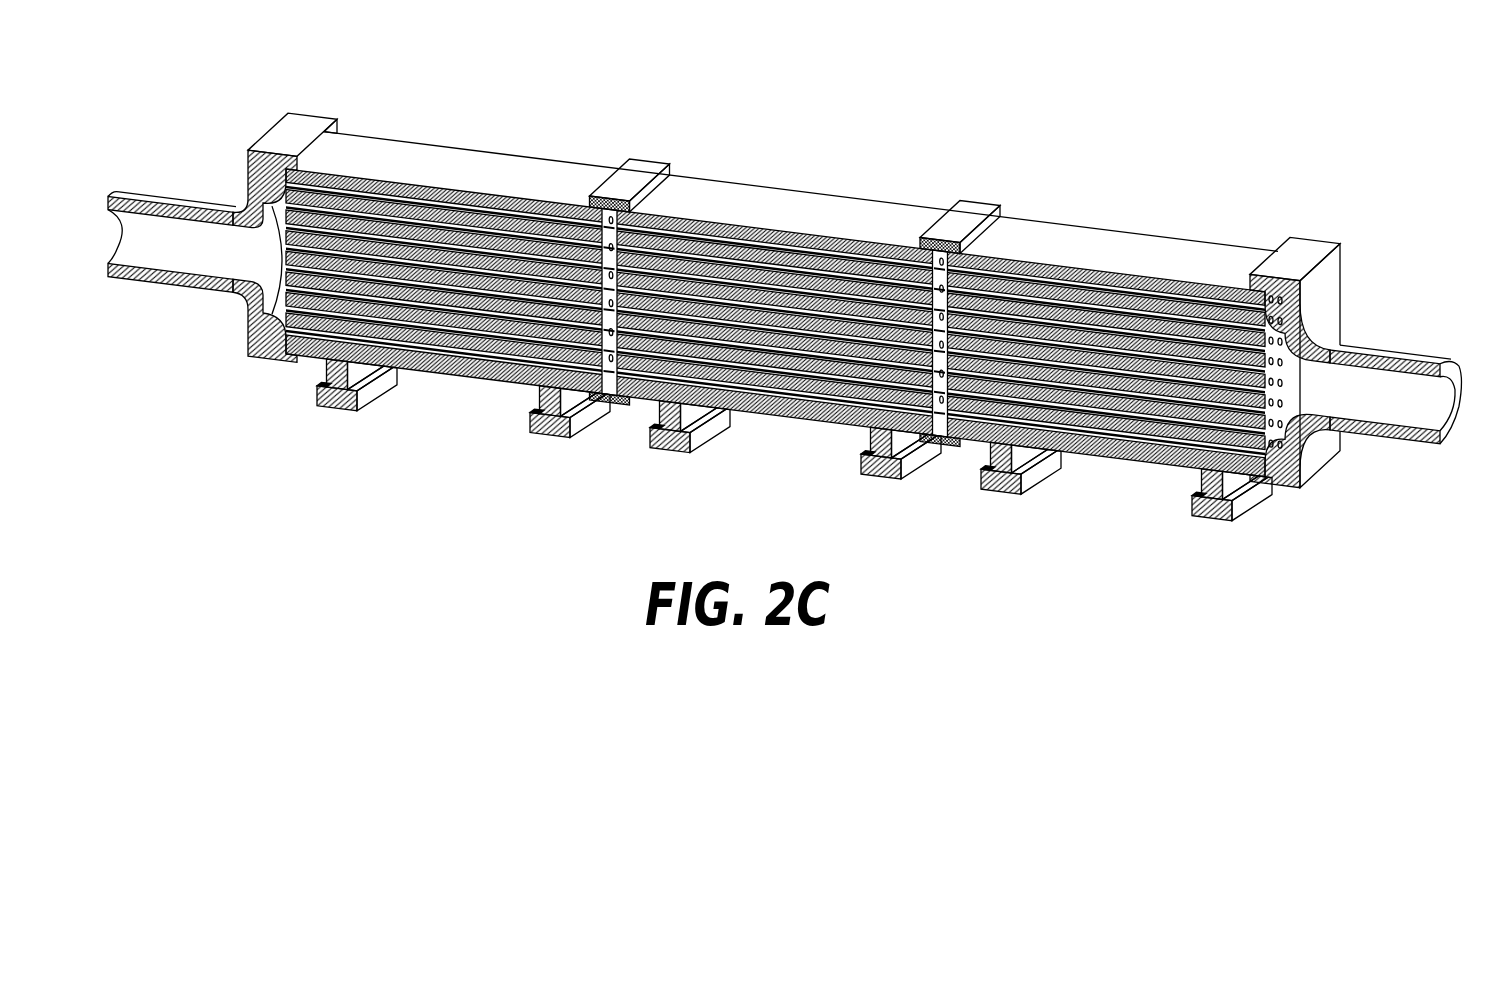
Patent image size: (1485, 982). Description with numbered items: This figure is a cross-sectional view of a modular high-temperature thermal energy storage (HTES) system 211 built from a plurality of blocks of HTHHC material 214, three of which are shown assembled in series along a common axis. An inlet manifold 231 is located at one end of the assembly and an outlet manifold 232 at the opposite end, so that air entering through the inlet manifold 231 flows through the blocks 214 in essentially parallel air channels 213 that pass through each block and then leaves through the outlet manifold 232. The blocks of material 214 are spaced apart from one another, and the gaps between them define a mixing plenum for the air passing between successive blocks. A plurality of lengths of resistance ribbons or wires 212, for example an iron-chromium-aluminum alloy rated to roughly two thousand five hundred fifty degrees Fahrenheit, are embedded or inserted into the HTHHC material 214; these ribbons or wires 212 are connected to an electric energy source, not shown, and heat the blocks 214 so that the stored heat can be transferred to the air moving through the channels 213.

The modular HTES system 211 is at (785, 294).
The resistance ribbons or wires 212 is at (445, 197).
The air channels 213 is at (515, 217).
The blocks of HTHHC material 214 is at (373, 147).
The inlet manifold 231 is at (160, 200).
The outlet manifold 232 is at (1390, 353).